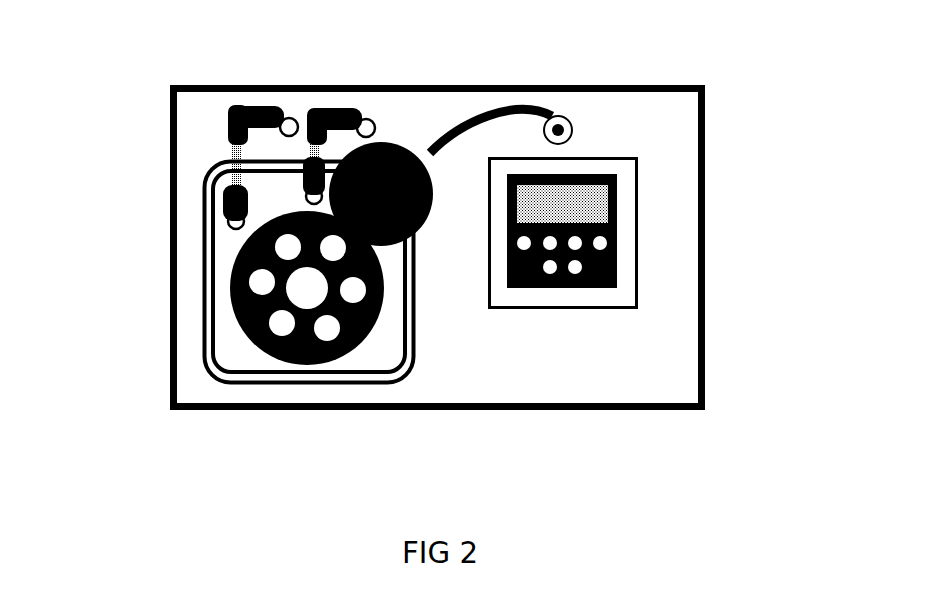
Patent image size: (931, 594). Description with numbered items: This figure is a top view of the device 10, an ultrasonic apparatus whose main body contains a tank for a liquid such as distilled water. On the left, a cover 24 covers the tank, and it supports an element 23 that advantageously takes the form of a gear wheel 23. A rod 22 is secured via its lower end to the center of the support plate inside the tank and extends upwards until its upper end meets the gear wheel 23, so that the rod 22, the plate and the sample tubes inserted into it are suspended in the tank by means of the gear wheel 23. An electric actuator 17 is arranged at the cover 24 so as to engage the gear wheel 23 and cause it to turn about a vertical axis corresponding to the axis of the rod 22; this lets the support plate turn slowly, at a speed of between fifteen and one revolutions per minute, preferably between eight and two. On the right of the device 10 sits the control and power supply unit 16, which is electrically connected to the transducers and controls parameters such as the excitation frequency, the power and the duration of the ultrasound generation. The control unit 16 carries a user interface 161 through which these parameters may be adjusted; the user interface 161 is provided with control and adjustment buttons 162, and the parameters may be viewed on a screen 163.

The device 10 is at (705, 362).
The control and power supply unit 16 is at (662, 158).
The user interface 161 is at (618, 203).
The control and/or adjustment buttons 162 is at (620, 250).
The screen 163 is at (590, 174).
The electric actuator 17 is at (397, 143).
The rod 22 is at (250, 312).
The gear wheel 23 is at (362, 330).
The cover 24 is at (230, 378).